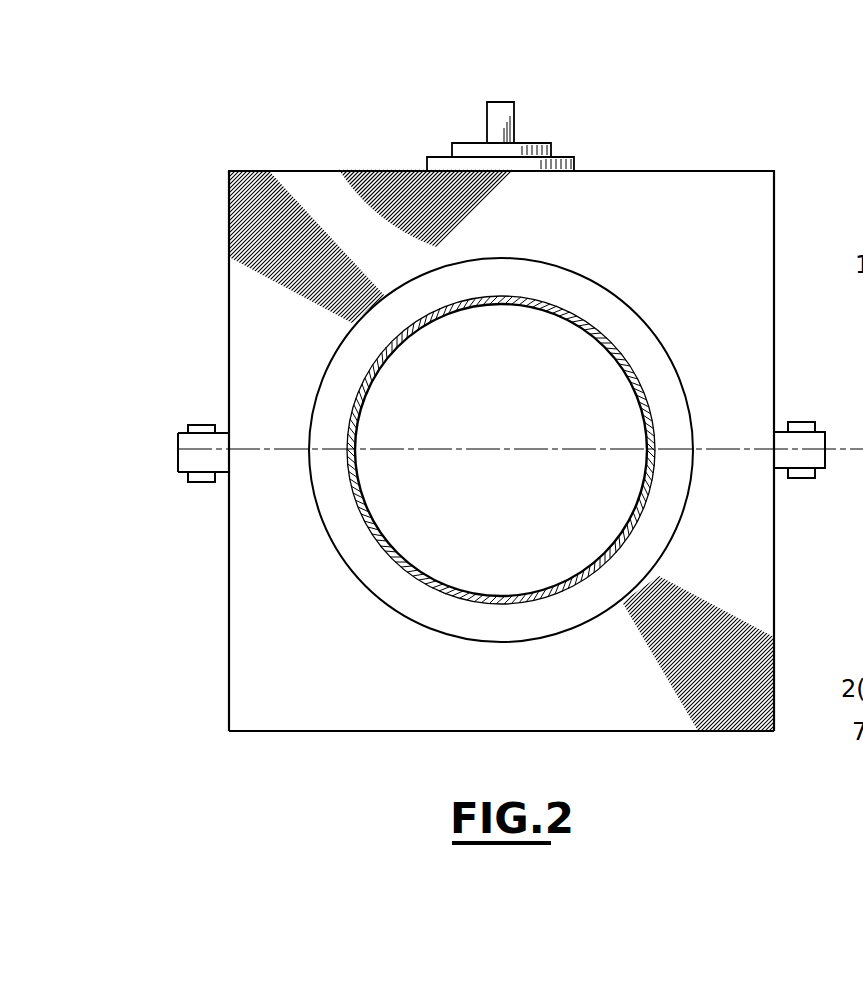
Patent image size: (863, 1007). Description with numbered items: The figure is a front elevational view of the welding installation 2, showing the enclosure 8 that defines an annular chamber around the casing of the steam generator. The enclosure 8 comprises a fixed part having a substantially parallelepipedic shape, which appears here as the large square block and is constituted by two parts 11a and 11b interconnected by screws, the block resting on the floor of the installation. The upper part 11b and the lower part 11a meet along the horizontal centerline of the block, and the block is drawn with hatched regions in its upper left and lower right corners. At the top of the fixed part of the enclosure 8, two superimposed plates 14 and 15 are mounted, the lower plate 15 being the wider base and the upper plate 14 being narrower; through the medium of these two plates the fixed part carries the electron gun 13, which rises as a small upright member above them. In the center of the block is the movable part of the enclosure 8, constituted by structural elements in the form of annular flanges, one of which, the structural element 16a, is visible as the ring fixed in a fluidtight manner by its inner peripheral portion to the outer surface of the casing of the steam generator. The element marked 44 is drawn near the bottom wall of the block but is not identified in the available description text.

The welding installation 2 is at (685, 170).
The enclosure 8 is at (226, 553).
The fixed part half 11a is at (745, 520).
The fixed part half 11b is at (740, 365).
The electron gun 13 is at (497, 108).
The superimposed plate 14 is at (532, 147).
The superimposed plate 15 is at (570, 160).
The structural element 16a is at (501, 435).
The bottom wall 44 is at (372, 708).